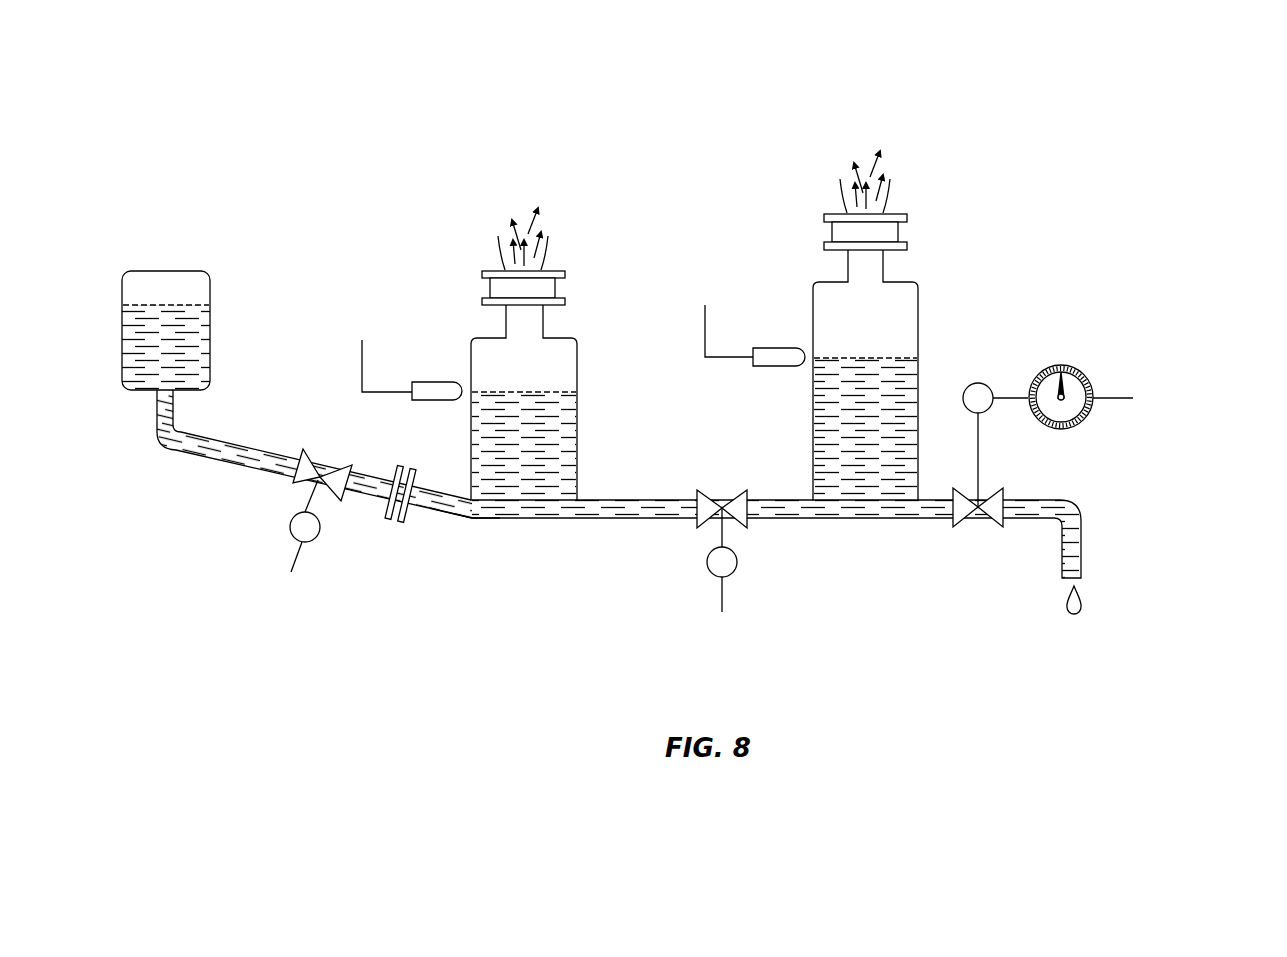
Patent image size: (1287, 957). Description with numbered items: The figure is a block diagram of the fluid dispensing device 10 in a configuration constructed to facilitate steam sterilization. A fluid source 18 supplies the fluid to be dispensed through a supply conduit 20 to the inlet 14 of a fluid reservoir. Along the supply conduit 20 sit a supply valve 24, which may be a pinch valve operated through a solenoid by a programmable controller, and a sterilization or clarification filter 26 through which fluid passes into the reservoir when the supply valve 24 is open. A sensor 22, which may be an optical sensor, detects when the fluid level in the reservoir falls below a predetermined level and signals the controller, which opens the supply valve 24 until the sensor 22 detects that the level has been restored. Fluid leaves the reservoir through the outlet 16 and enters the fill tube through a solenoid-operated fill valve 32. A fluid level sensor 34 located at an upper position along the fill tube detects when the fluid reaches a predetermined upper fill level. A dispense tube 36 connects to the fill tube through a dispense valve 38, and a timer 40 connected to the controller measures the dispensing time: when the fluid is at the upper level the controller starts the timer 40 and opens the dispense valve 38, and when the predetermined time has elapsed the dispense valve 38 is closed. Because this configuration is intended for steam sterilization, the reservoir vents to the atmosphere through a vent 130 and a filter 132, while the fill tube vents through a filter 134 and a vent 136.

The fluid dispensing device 10 is at (1046, 135).
The inlet 14 is at (471, 505).
The outlet 16 is at (577, 508).
The fluid source 18 is at (165, 270).
The supply conduit 20 is at (200, 455).
The sensor 22 is at (447, 381).
The supply valve 24 is at (302, 485).
The sterilization or clarification filter 26 is at (394, 523).
The fill valve 32 is at (708, 525).
The fluid level sensor 34 is at (789, 347).
The dispense tube 36 is at (1083, 542).
The dispense valve 38 is at (962, 521).
The timer 40 is at (1088, 374).
The vent 130 is at (544, 253).
The filter 132 is at (489, 289).
The filter 134 is at (832, 231).
The vent 136 is at (888, 203).